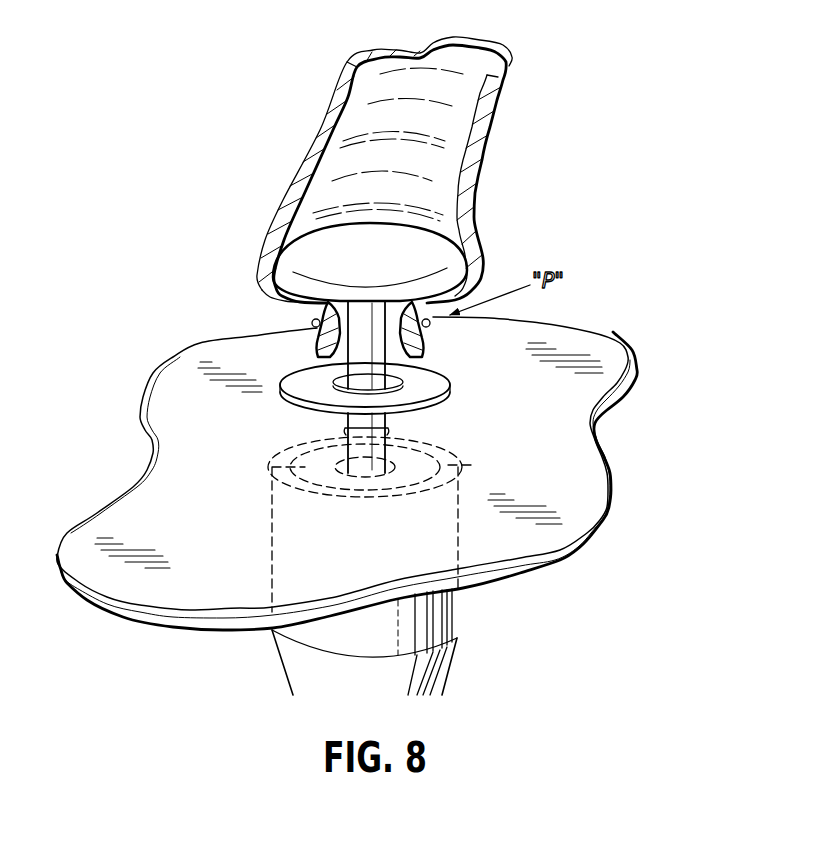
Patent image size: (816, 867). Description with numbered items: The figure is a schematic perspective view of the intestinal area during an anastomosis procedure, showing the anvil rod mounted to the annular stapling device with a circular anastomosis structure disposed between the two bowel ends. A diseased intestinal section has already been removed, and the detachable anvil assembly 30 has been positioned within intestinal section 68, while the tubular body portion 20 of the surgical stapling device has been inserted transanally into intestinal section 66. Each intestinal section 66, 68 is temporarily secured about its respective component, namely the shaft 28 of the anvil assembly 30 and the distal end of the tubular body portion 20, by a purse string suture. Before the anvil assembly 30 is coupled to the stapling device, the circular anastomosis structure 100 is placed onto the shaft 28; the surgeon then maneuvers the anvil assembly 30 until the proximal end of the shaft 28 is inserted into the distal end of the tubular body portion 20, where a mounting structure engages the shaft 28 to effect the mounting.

The intestinal section 66 is at (505, 115).
The anvil assembly 30 is at (313, 252).
The shaft 28 is at (355, 346).
The circular anastomosis structure 100 is at (283, 383).
The intestinal section 68 is at (637, 332).
The tubular body portion 20 is at (270, 638).